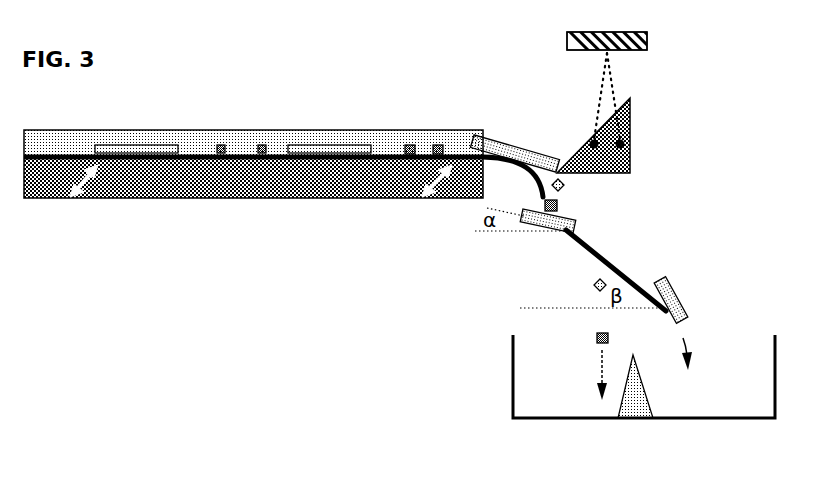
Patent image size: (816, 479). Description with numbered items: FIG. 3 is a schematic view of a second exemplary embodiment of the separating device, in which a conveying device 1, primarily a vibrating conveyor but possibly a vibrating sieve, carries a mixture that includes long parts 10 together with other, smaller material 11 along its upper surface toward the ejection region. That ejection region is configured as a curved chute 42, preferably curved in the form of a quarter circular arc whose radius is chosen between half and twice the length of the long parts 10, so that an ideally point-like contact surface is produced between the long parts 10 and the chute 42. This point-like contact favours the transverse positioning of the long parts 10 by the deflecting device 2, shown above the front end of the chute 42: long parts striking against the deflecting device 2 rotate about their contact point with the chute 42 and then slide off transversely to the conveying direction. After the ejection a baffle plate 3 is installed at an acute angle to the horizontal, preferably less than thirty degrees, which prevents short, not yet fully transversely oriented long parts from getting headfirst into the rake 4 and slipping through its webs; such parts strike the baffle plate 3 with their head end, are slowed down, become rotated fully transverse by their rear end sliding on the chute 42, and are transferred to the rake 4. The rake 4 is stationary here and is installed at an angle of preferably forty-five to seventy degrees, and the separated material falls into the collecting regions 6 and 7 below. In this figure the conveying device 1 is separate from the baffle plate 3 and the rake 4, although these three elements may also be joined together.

The conveying device 1 is at (253, 164).
The long parts 10 is at (136, 127).
The second component 11 is at (330, 128).
The curved chute 42 is at (514, 163).
The deflecting device 2 is at (626, 86).
The baffle plate 3 is at (548, 236).
The rake 4 is at (616, 267).
The first collecting bin 6 is at (583, 375).
The second collecting bin 7 is at (704, 376).